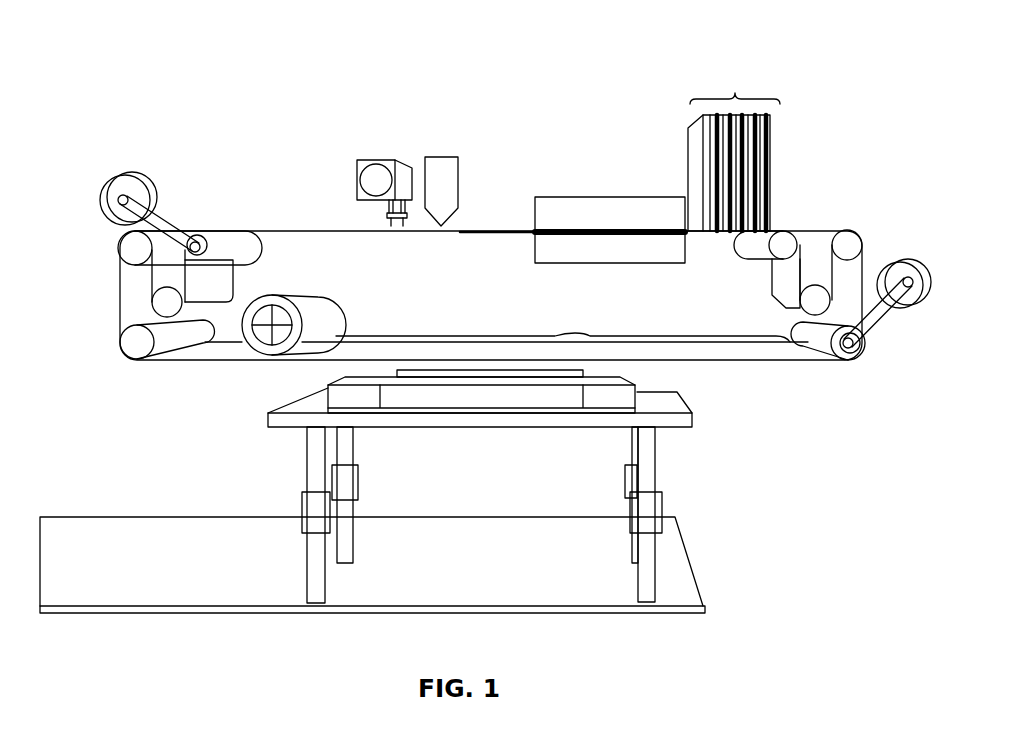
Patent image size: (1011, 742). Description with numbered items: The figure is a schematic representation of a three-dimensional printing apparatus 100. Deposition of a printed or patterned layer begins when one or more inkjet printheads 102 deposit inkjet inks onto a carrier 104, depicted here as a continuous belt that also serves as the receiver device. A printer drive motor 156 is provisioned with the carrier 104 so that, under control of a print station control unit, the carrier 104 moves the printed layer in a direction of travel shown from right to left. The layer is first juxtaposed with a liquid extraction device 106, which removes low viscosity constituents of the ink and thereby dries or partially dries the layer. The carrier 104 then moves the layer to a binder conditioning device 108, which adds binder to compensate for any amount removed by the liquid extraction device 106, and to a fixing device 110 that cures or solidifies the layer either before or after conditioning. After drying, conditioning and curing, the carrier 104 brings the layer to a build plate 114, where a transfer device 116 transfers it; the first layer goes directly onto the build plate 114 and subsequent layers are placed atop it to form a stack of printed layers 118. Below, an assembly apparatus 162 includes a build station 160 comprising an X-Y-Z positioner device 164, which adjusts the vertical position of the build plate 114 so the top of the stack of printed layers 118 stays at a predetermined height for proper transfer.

The 3D printing apparatus 100 is at (112, 303).
The inkjet printheads 102 is at (735, 93).
The carrier 104 is at (308, 233).
The liquid extraction device 106 is at (617, 197).
The binder conditioning device 108 is at (441, 160).
The fixing device 110 is at (370, 160).
The build plate 114 is at (692, 424).
The transfer device 116 is at (337, 320).
The stack of printed layers 118 is at (347, 398).
The printer drive motor 156 is at (112, 183).
The build station 160 is at (702, 523).
The assembly apparatus 162 is at (183, 516).
The X-Y-Z positioner device 164 is at (318, 568).